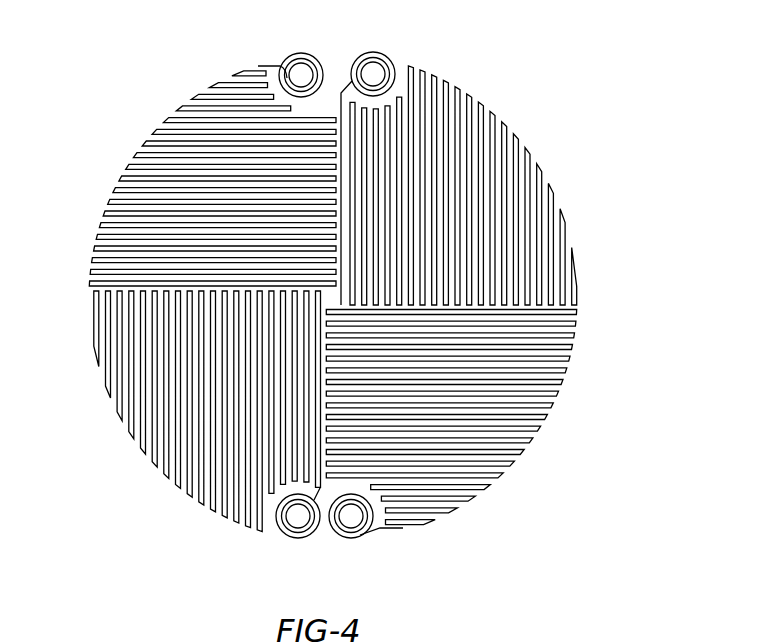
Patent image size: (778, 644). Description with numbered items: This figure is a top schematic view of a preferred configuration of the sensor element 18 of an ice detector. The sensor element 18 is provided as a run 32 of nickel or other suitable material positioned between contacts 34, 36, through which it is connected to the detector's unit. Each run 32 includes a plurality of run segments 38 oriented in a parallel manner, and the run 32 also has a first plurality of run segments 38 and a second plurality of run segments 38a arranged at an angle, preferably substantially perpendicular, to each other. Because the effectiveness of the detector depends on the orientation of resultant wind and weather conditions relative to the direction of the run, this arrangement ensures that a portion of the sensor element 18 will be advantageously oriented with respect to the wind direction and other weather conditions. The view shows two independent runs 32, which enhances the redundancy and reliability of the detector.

The sensor element 18 is at (366, 300).
The run 32 is at (341, 281).
The contact 34 is at (290, 62).
The contact 36 is at (290, 513).
The run segment 38 is at (472, 128).
The run segment 38a is at (175, 125).